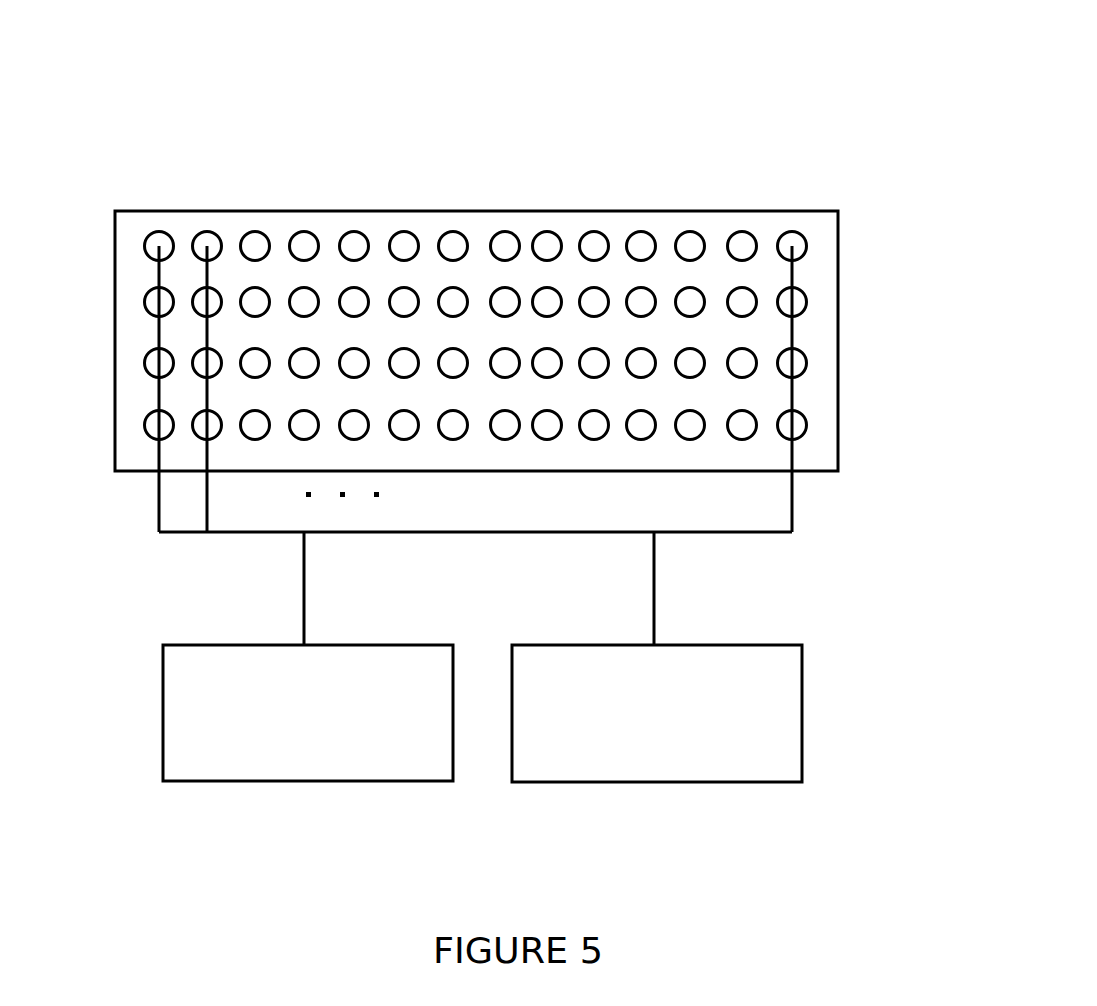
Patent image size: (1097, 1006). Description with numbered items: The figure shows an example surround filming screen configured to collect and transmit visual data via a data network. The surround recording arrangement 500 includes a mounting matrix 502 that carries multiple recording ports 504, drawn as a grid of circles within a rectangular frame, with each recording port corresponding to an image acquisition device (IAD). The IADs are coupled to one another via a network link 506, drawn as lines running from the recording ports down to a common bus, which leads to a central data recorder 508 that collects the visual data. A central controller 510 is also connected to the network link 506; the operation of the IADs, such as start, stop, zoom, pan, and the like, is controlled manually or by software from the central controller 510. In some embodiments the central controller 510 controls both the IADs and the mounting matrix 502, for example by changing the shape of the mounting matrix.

The surround recording arrangement 500 is at (487, 127).
The mounting matrix 502 is at (223, 210).
The recording ports 504 is at (807, 300).
The network link 506 is at (793, 493).
The central data recorder 508 is at (160, 735).
The central controller 510 is at (803, 680).